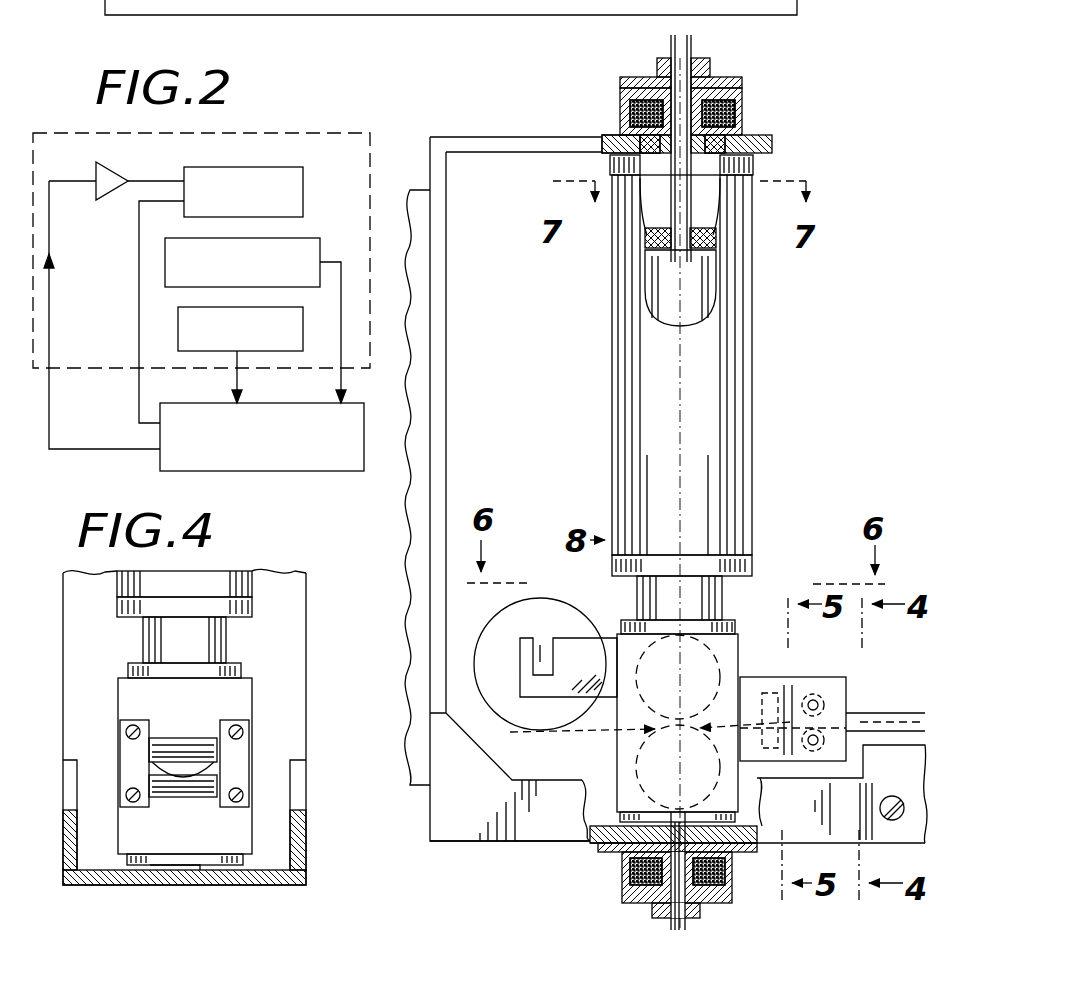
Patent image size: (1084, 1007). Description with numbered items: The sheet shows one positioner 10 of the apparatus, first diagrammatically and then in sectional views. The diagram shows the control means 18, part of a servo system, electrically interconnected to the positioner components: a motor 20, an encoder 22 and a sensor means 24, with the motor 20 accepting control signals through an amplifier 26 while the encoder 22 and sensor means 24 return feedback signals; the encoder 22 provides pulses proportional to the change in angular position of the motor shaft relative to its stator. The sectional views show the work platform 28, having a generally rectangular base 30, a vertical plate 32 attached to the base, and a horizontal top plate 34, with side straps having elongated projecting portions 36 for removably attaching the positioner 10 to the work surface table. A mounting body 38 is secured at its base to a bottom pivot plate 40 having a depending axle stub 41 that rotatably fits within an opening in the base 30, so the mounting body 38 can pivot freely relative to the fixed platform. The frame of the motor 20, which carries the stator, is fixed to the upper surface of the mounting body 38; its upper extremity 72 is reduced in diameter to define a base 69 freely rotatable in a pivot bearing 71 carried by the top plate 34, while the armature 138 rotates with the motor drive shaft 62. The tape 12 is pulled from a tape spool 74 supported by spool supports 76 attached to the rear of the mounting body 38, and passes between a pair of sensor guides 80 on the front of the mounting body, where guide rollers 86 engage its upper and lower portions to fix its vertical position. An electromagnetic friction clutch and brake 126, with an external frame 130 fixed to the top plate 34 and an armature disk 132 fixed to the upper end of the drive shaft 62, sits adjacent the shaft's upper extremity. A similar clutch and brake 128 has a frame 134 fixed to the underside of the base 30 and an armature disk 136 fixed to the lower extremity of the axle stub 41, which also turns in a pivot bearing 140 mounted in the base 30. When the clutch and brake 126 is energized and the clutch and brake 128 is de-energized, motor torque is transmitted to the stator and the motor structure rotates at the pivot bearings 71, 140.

In FIG. 2, the positioner 10 is at (285, 133).
In FIG. 3, the tape 12 is at (890, 713).
In FIG. 4, the tape 12 is at (200, 768).
In FIG. 2, the control means 18 is at (322, 471).
In FIG. 2, the motor 20 is at (303, 183).
In FIG. 3, the motor 20 is at (752, 296).
In FIG. 4, the motor 20 is at (243, 580).
In FIG. 2, the encoder 22 is at (313, 238).
In FIG. 2, the sensor means 24 is at (303, 331).
In FIG. 2, the amplifier 26 is at (118, 178).
In FIG. 3, the work platform 28 is at (478, 843).
In FIG. 4, the work platform 28 is at (312, 830).
In FIG. 3, the base 30 is at (598, 797).
In FIG. 4, the base 30 is at (205, 883).
In FIG. 3, the vertical plate 32 is at (446, 346).
In FIG. 4, the vertical plate 32 is at (295, 596).
In FIG. 3, the top plate 34 is at (510, 137).
In FIG. 3, the projecting portions 36 is at (895, 843).
In FIG. 3, the mounting body 38 is at (741, 648).
In FIG. 4, the mounting body 38 is at (120, 683).
In FIG. 3, the bottom pivot plate 40 is at (743, 818).
In FIG. 4, the bottom pivot plate 40 is at (153, 866).
In FIG. 3, the axle stub 41 is at (686, 916).
In FIG. 3, the motor drive shaft 62 is at (671, 56).
In FIG. 3, the base 69 is at (773, 146).
In FIG. 3, the pivot bearing 71 is at (625, 135).
In FIG. 3, the upper extremity 72 is at (753, 166).
In FIG. 3, the tape spool 74 is at (552, 600).
In FIG. 3, the spool supports 76 is at (555, 690).
In FIG. 3, the sensor guides 80 is at (765, 678).
In FIG. 4, the sensor guides 80 is at (127, 750).
In FIG. 3, the guide rollers 86 is at (816, 738).
In FIG. 4, the guide rollers 86 is at (172, 745).
In FIG. 3, the clutch and brake 126 is at (710, 60).
In FIG. 3, the clutch and brake 128 is at (612, 884).
In FIG. 3, the external frame 130 is at (742, 100).
In FIG. 3, the armature disk 132 is at (742, 80).
In FIG. 3, the frame 134 is at (598, 846).
In FIG. 3, the armature disk 136 is at (652, 900).
In FIG. 3, the armature 138 is at (660, 273).
In FIG. 3, the pivot bearing 140 is at (760, 833).